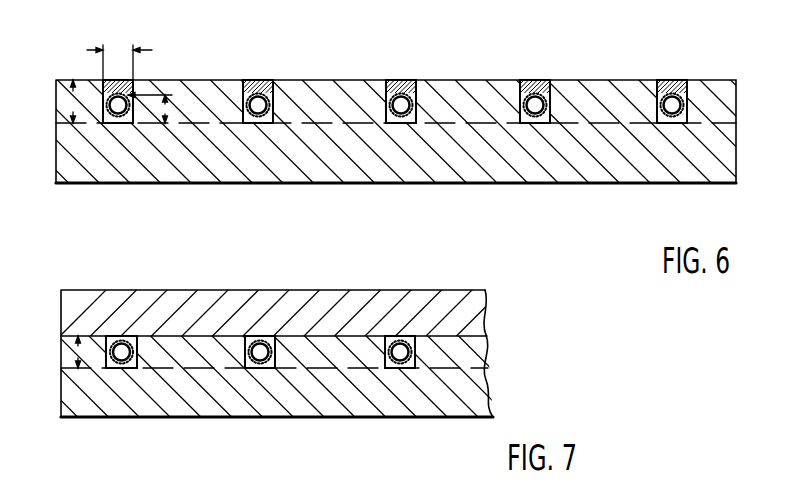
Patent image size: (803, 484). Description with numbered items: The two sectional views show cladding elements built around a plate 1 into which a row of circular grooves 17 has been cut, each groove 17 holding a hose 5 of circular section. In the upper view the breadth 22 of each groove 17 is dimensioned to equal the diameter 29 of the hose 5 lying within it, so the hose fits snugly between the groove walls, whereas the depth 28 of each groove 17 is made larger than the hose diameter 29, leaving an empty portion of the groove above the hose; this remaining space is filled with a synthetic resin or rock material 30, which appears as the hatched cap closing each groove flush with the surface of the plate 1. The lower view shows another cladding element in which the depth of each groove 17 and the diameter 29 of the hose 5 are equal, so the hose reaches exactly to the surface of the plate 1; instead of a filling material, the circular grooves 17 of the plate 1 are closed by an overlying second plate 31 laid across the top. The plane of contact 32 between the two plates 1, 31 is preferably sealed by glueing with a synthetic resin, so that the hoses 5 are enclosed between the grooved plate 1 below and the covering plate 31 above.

In FIG. 6, the plate 1 is at (622, 173).
In FIG. 7, the plate 1 is at (477, 398).
In FIG. 6, the hose 5 is at (122, 123).
In FIG. 7, the hose 5 is at (128, 368).
In FIG. 6, the groove 17 is at (278, 92).
In FIG. 7, the groove 17 is at (270, 368).
In FIG. 6, the breadth of groove 22 is at (119, 49).
In FIG. 6, the depth of groove 28 is at (72, 105).
In FIG. 6, the hose diameter 29 is at (173, 110).
In FIG. 7, the hose diameter 29 is at (82, 352).
In FIG. 6, the synthetic resin or rock material 30 is at (257, 85).
In FIG. 7, the second plate 31 is at (337, 305).
In FIG. 7, the plane of contact 32 is at (492, 337).